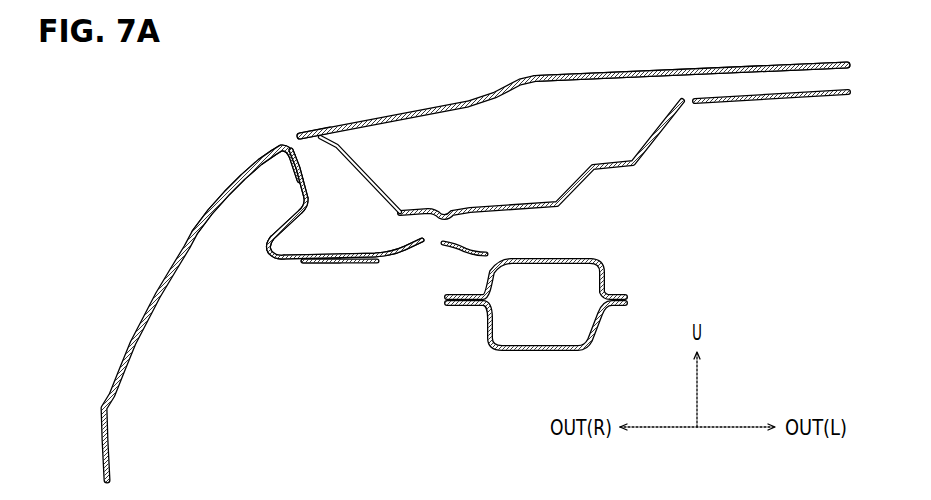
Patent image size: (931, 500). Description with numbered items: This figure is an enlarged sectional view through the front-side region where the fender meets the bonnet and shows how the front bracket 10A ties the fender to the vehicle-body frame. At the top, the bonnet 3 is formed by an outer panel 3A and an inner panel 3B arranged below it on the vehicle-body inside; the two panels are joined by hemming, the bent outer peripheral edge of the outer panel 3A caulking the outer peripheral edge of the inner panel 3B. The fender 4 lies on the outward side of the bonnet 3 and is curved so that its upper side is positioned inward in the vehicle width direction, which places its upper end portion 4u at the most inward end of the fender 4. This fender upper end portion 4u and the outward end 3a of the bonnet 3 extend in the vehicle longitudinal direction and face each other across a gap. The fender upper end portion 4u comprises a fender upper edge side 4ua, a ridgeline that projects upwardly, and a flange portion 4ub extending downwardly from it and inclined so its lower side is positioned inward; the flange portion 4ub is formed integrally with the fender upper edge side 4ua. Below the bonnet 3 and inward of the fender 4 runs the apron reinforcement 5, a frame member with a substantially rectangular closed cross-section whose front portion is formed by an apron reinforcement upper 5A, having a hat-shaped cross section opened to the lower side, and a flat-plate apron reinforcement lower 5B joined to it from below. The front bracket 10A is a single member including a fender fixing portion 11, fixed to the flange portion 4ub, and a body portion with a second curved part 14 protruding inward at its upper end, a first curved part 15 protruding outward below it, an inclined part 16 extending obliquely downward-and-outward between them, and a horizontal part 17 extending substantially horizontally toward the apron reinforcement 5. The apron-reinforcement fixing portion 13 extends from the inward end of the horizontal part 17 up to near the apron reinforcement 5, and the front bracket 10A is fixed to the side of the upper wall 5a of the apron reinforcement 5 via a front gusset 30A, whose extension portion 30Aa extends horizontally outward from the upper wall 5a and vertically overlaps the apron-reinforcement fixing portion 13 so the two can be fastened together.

The bonnet 3 is at (573, 124).
The outward end of the bonnet 3a is at (299, 137).
The outer panel 3A is at (625, 71).
The inner panel 3B is at (652, 143).
The fender 4 is at (196, 271).
The fender upper end portion 4u is at (247, 147).
The fender upper edge side 4ua is at (283, 146).
The flange portion 4ub is at (296, 170).
The apron reinforcement 5 is at (543, 292).
The upper wall 5a is at (518, 255).
The apron reinforcement upper 5A is at (543, 262).
The apron reinforcement lower 5B is at (588, 341).
The front bracket 10A is at (232, 262).
The fender fixing portion 11 is at (307, 225).
The apron-reinforcement fixing portion 13 is at (338, 251).
The second curved part 14 is at (309, 200).
The first curved part 15 is at (268, 245).
The inclined part 16 is at (296, 218).
The horizontal part 17 is at (298, 260).
The front gusset 30A is at (355, 293).
The extension portion 30Aa is at (314, 264).